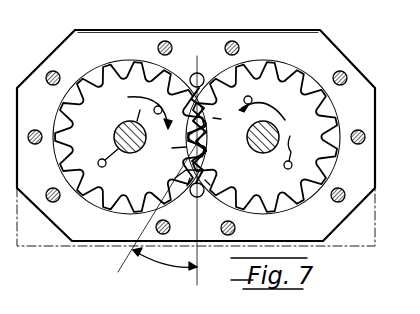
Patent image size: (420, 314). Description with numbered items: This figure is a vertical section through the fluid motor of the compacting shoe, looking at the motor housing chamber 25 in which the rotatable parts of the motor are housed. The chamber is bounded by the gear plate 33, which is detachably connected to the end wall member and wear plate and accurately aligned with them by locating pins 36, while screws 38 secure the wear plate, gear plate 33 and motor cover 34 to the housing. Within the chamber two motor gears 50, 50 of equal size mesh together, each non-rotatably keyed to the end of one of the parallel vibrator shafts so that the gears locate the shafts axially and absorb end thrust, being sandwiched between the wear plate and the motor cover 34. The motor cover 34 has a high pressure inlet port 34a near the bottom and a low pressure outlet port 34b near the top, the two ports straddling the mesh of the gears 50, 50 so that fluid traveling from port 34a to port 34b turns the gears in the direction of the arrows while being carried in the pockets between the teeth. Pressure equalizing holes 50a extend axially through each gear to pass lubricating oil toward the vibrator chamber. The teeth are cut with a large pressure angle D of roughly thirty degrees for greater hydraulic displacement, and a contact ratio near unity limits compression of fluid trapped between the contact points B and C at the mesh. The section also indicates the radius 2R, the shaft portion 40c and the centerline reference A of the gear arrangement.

The gear plate 33 is at (196, 138).
The screws 38 is at (54, 71).
The locating pins 36 is at (36, 130).
The gear pitch radius 2R is at (151, 70).
The motor housing chamber 25 is at (153, 68).
The motor cover 34 is at (257, 70).
The high pressure inlet port 34a is at (205, 170).
The low pressure outlet port 34b is at (197, 72).
The shaft 40c is at (115, 134).
The motor gears 50 is at (195, 168).
The pressure equalizing holes 50a is at (154, 110).
The point A is at (195, 307).
The contact point B is at (222, 122).
The contact point C is at (173, 151).
The pressure angle D is at (165, 259).